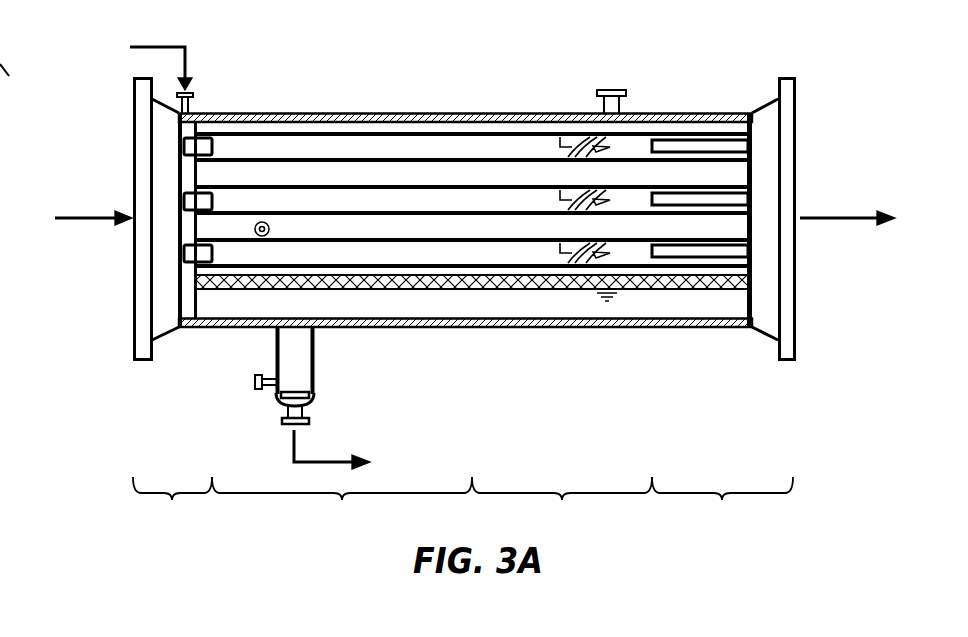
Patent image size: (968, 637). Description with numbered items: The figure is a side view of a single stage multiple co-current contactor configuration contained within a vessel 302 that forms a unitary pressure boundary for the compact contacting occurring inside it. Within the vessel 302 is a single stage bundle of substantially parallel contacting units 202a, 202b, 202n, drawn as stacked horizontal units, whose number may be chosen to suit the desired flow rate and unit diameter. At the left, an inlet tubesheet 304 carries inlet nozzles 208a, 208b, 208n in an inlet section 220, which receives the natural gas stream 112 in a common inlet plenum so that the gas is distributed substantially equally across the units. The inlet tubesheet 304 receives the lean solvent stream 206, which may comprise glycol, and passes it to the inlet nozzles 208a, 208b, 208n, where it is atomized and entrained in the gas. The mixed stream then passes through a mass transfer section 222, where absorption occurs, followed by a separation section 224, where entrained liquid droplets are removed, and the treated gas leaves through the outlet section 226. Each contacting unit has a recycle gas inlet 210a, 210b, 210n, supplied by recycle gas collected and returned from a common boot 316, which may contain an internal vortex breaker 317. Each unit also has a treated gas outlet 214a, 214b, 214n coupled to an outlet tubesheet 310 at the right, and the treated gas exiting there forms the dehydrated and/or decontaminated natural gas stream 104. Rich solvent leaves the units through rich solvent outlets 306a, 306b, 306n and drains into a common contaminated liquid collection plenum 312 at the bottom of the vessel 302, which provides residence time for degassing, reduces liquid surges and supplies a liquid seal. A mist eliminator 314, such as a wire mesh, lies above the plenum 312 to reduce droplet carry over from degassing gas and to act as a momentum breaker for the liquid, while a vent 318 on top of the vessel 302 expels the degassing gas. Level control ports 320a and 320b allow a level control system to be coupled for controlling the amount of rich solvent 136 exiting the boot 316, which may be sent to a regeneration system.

The natural gas stream 104 is at (869, 217).
The natural gas stream 112 is at (73, 219).
The rich solvent 136 is at (352, 451).
The contacting unit 202a is at (375, 132).
The contacting unit 202b is at (323, 186).
The contacting unit 202n is at (323, 239).
The lean solvent stream 206 is at (141, 75).
The inlet nozzle 208a is at (184, 145).
The inlet nozzle 208b is at (184, 200).
The inlet nozzle 208n is at (184, 257).
The recycle gas inlet 210a is at (560, 132).
The recycle gas inlet 210b is at (563, 188).
The recycle gas inlet 210n is at (563, 243).
The treated gas outlet 214a is at (752, 142).
The treated gas outlet 214b is at (752, 197).
The treated gas outlet 214n is at (752, 256).
The inlet section 220 is at (172, 502).
The mass transfer section 222 is at (342, 502).
The separation section 224 is at (562, 502).
The outlet section 226 is at (722, 502).
The vessel 302 is at (243, 113).
The inlet tubesheet 304 is at (184, 173).
The rich solvent outlet 306a is at (722, 159).
The rich solvent outlet 306b is at (722, 213).
The rich solvent outlet 306n is at (722, 265).
The outlet tubesheet 310 is at (736, 112).
The common contaminated liquid collection plenum 312 is at (540, 310).
The mist eliminator 314 is at (453, 289).
The boot 316 is at (317, 346).
The vortex breaker 317 is at (300, 392).
The vent 318 is at (610, 88).
The level control port 320a is at (256, 384).
The level control port 320b is at (258, 236).